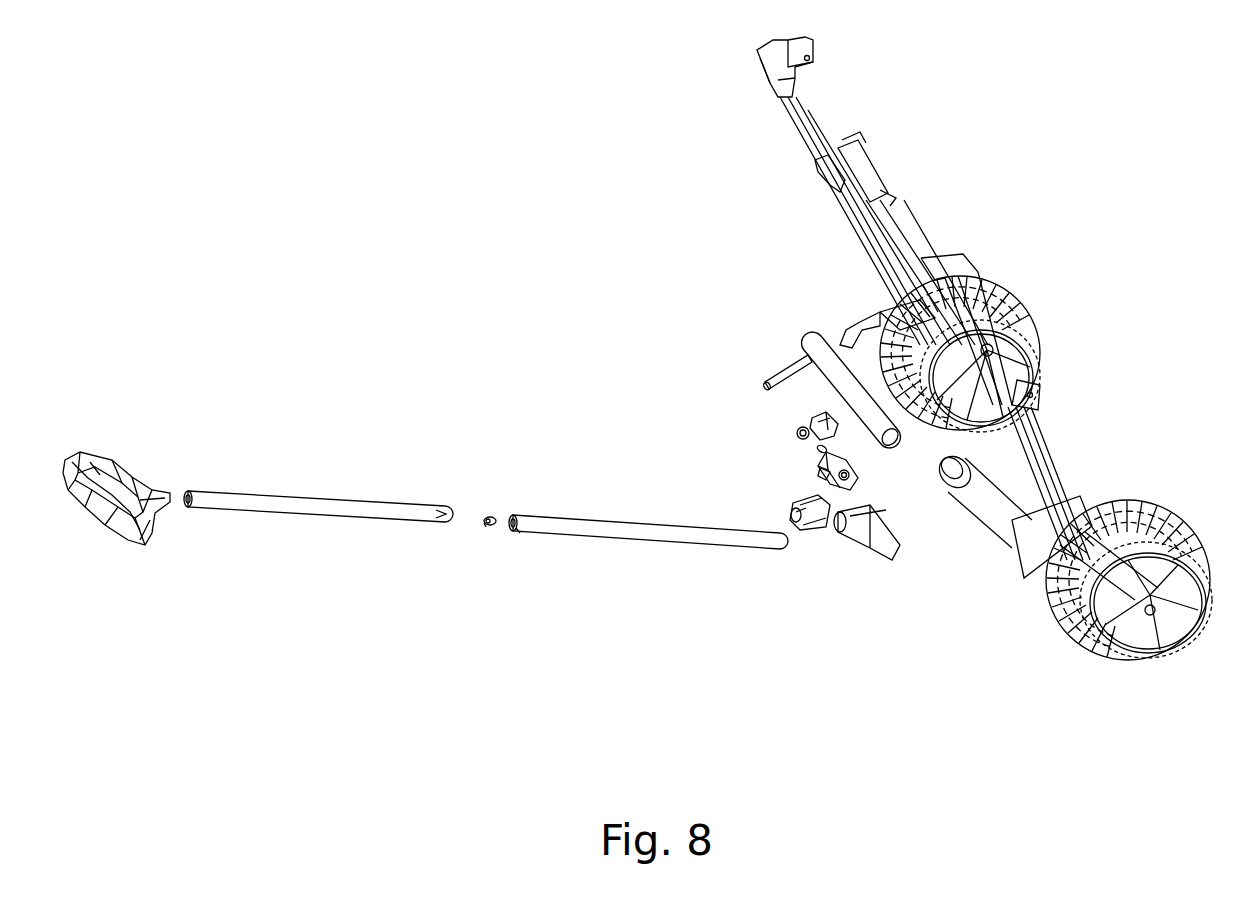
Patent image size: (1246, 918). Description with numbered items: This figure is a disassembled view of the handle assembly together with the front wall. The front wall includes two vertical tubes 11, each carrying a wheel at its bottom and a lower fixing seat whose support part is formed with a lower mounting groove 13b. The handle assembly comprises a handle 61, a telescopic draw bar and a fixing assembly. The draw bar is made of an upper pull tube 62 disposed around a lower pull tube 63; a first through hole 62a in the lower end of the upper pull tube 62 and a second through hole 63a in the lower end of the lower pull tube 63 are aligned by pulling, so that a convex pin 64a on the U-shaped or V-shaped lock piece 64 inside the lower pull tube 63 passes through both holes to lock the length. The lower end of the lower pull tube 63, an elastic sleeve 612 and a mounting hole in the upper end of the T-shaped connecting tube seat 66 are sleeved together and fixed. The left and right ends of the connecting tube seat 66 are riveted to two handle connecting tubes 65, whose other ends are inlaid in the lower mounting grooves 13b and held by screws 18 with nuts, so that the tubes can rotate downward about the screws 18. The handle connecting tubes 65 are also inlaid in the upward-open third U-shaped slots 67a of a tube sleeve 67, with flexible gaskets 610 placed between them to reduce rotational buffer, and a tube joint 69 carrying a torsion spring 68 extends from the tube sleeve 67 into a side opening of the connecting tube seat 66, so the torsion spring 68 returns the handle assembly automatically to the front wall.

The vertical tube 11 is at (1050, 458).
The lower mounting groove 13b is at (848, 330).
The screw 18 is at (770, 367).
The handle 61 is at (125, 468).
The upper pull tube 62 is at (317, 497).
The first through hole 62a is at (430, 527).
The lower pull tube 63 is at (570, 513).
The second through hole 63a is at (520, 537).
The lock piece 64 is at (490, 517).
The convex pin 64a is at (483, 537).
The handle connecting tube 65 is at (807, 332).
The connecting tube seat 66 is at (872, 553).
The tube sleeve 67 is at (813, 463).
The third U-shaped slot 67a is at (820, 473).
The torsion spring 68 is at (790, 430).
The tube joint 69 is at (805, 413).
The gasket 610 is at (813, 448).
The elastic sleeve 612 is at (800, 530).